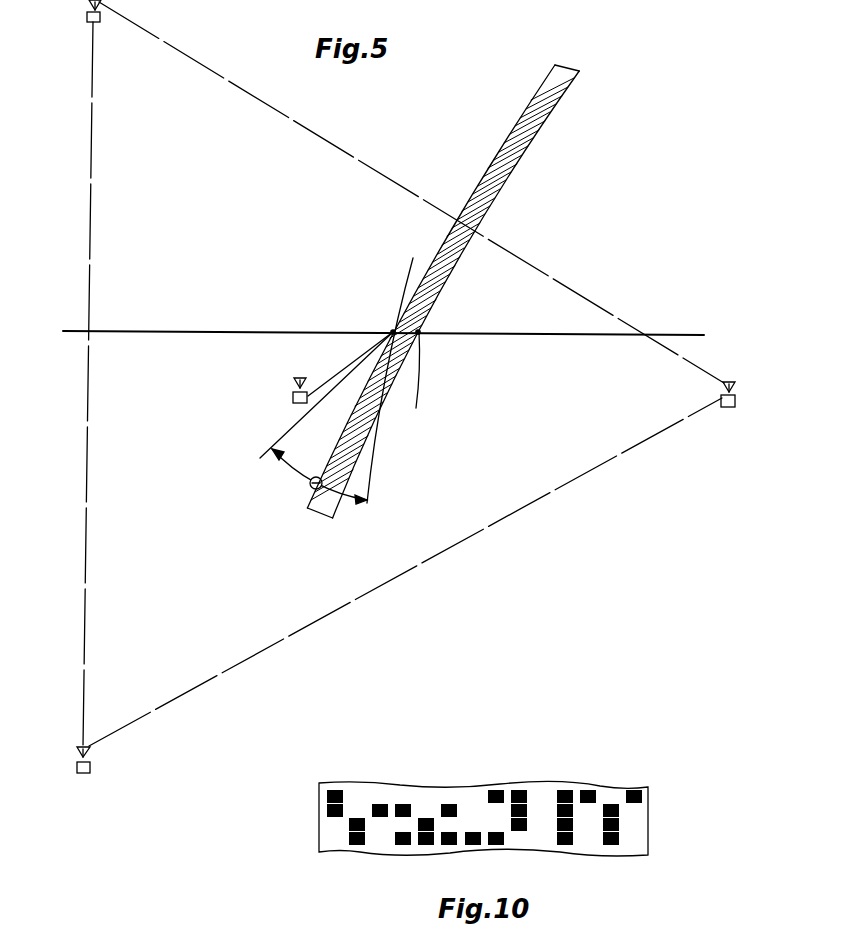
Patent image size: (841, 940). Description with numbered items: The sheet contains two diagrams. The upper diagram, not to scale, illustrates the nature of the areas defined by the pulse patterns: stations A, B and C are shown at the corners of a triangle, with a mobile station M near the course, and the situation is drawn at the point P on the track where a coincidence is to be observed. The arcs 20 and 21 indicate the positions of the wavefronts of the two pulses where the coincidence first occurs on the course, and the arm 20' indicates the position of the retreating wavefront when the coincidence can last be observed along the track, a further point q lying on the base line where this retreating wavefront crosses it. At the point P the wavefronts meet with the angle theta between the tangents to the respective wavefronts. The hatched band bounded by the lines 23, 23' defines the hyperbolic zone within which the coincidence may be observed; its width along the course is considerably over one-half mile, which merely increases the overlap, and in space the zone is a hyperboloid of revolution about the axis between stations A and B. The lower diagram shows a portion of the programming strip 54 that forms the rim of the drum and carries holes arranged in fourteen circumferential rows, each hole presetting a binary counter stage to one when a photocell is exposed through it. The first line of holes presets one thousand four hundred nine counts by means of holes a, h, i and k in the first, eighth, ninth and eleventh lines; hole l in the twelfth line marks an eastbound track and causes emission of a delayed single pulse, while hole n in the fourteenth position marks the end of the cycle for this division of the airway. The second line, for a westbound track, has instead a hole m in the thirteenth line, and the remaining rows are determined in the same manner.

In FIG. 5, the arc 20 is at (390, 380).
In FIG. 5, the arm 20' is at (435, 369).
In FIG. 5, the arc 21 is at (357, 364).
In FIG. 5, the line 23 is at (366, 417).
In FIG. 5, the line 23' is at (486, 198).
In FIG. 10, the programming strip 54 is at (322, 831).
In FIG. 5, the point p P is at (392, 330).
In FIG. 5, the position point q is at (420, 331).
In FIG. 5, the station A is at (728, 407).
In FIG. 5, the station B is at (100, 20).
In FIG. 5, the station C is at (90, 767).
In FIG. 5, the mobile station M is at (293, 399).
In FIG. 10, the hole a is at (337, 790).
In FIG. 10, the hole h is at (498, 790).
In FIG. 10, the hole i is at (521, 790).
In FIG. 10, the hole k is at (567, 790).
In FIG. 10, the hole l is at (590, 790).
In FIG. 10, the hole m is at (612, 804).
In FIG. 10, the hole n is at (636, 790).